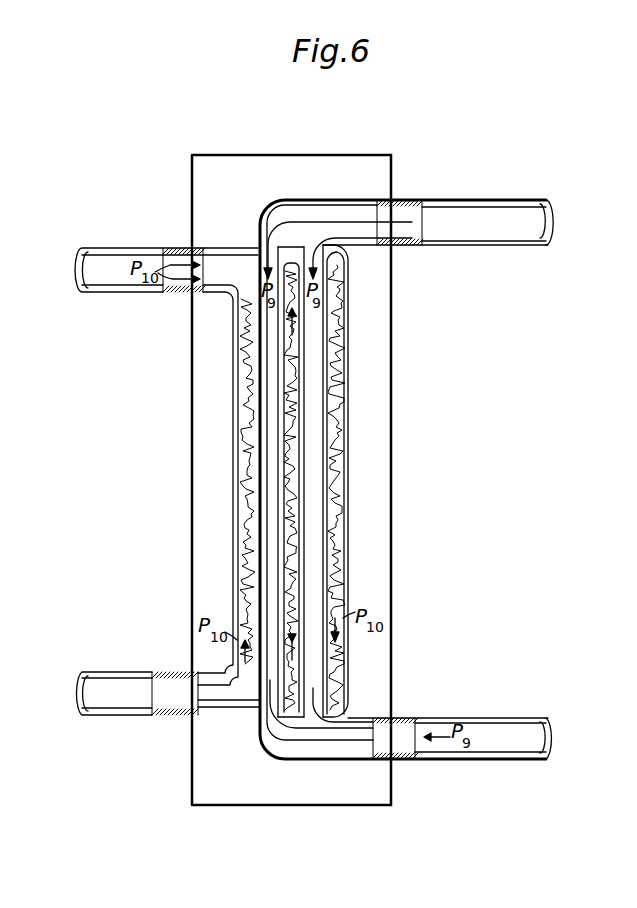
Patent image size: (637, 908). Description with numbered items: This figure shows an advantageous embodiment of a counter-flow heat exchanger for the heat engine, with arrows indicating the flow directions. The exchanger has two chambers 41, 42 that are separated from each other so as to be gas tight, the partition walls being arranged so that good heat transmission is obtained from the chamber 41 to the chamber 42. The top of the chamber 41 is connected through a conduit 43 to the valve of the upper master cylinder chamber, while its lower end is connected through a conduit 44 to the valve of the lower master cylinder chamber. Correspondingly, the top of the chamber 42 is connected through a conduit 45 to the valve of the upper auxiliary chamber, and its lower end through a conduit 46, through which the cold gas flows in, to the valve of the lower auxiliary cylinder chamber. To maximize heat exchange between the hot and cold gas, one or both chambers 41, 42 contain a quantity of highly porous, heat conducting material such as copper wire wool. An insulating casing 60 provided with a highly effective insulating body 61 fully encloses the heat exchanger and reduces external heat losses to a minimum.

The chamber 41 is at (268, 418).
The chamber 42 is at (333, 445).
The conduit 43 is at (463, 200).
The conduit 44 is at (463, 718).
The conduit 45 is at (138, 248).
The conduit 46 is at (130, 672).
The insulating casing 60 is at (393, 322).
The insulating body 61 is at (370, 363).